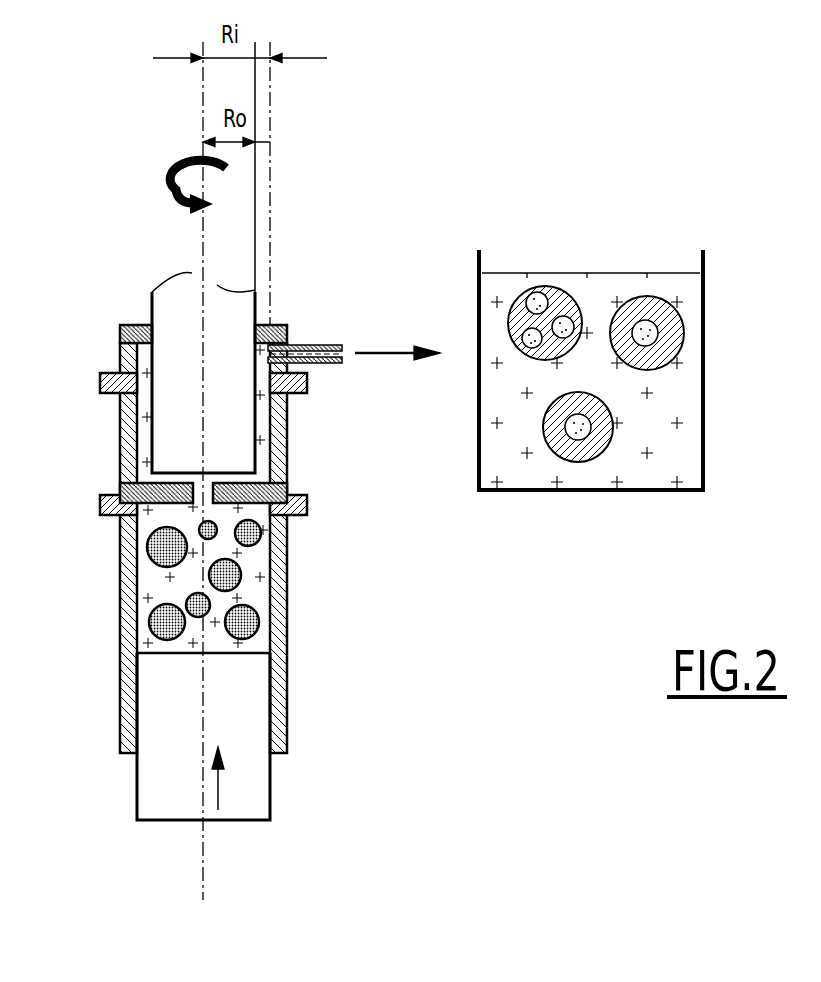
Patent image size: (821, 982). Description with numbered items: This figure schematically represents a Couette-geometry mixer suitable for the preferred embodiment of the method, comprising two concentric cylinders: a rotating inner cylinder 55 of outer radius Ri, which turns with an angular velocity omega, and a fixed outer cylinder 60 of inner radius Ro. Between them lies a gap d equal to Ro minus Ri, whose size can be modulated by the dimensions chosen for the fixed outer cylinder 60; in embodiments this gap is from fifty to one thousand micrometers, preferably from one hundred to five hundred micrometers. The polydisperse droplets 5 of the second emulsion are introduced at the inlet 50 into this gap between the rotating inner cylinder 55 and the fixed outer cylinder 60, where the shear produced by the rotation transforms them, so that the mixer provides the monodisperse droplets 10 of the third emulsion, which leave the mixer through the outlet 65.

The polydisperse droplets 5 is at (138, 578).
The monodisperse droplets 10 is at (625, 422).
The inlet 50 is at (197, 490).
The rotating inner cylinder 55 is at (182, 300).
The fixed outer cylinder 60 is at (281, 421).
The outlet 65 is at (302, 338).